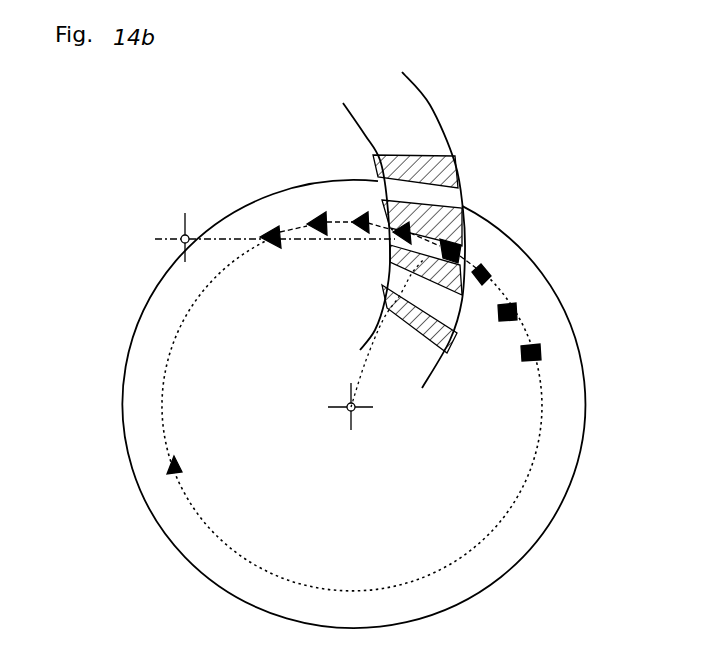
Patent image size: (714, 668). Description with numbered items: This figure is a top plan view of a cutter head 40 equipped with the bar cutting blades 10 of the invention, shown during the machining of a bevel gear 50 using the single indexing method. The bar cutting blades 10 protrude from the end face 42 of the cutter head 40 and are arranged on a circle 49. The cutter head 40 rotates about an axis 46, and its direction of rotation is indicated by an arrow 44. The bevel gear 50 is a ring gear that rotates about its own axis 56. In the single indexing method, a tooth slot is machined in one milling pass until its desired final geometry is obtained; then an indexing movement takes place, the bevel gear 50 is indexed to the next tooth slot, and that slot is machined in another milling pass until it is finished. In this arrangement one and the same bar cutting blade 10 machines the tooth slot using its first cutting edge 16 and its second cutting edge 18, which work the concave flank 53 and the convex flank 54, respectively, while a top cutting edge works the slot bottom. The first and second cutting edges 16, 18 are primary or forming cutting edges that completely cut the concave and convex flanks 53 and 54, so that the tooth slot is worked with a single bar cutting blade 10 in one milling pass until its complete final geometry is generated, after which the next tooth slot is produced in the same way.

The bar cutting blade 10 is at (500, 282).
The first cutting edge 16 is at (493, 272).
The second cutting edge 18 is at (487, 289).
The cutter head 40 is at (568, 501).
The end face 42 is at (512, 542).
The arrow 44 is at (172, 467).
The axis 46 is at (345, 412).
The circle 49 is at (545, 444).
The bevel gear 50 is at (410, 122).
The concave flank 53 is at (463, 212).
The convex flank 54 is at (468, 256).
The axis 56 is at (182, 236).